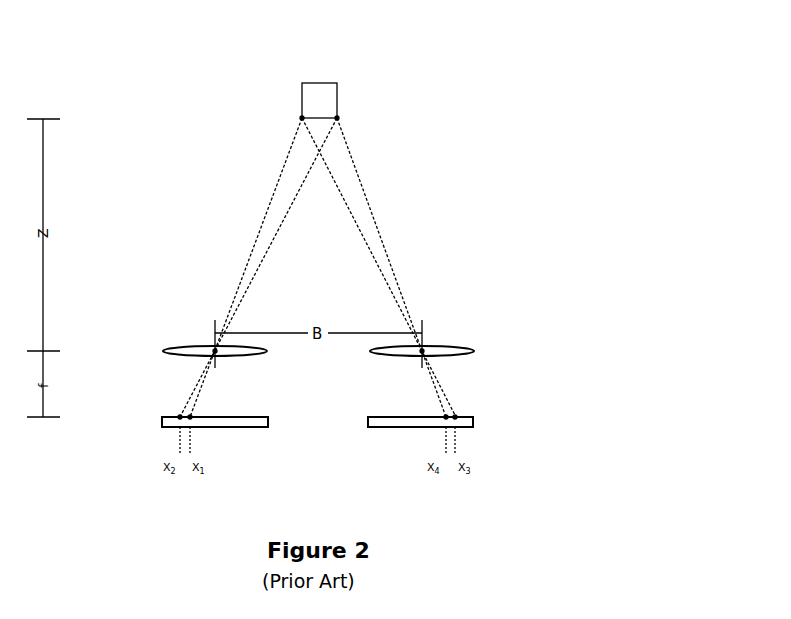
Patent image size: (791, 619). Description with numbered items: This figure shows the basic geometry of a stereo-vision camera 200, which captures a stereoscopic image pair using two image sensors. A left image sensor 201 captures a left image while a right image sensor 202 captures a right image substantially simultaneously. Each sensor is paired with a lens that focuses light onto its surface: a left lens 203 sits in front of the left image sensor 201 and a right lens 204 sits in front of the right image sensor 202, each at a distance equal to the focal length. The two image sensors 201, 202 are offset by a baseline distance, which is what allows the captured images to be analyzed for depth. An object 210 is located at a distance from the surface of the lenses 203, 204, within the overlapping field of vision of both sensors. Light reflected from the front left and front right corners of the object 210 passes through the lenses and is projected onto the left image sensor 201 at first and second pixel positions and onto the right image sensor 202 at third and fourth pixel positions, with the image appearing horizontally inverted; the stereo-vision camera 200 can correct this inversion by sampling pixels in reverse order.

The stereo-vision camera 200 is at (618, 255).
The left image sensor 201 is at (165, 426).
The right image sensor 202 is at (473, 427).
The left lens 203 is at (181, 348).
The right lens 204 is at (454, 348).
The object 210 is at (337, 83).